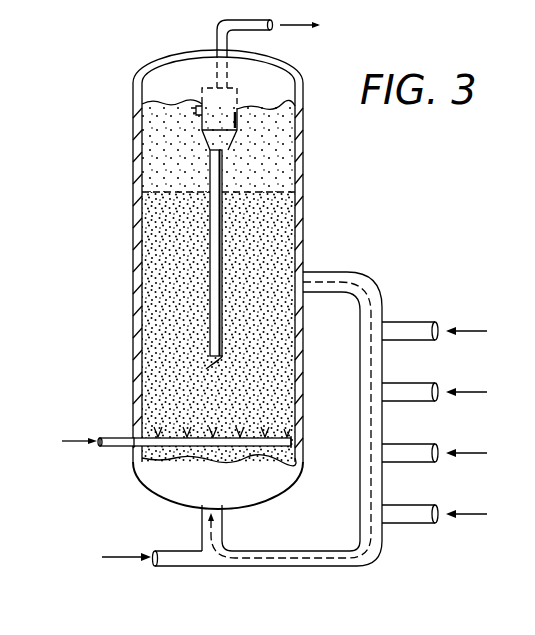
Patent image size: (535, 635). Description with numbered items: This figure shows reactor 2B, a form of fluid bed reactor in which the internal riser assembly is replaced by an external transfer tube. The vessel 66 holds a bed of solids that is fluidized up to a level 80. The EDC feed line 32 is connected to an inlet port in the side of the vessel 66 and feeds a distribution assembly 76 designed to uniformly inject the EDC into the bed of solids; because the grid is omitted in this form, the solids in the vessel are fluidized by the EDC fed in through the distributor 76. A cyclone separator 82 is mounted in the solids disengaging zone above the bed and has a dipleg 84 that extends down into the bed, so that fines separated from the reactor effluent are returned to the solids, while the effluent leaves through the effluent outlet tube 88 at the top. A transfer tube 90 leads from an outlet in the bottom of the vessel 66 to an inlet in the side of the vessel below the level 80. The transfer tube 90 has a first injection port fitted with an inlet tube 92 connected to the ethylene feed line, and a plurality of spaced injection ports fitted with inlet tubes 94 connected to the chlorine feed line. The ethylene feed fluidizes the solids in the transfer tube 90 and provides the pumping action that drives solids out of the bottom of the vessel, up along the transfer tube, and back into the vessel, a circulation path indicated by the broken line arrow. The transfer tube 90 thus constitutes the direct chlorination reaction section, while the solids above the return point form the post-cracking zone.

The reactor 2B is at (312, 160).
The vessel 66 is at (303, 240).
The level 80 is at (162, 191).
The cyclone separator 82 is at (223, 123).
The dipleg 84 is at (212, 224).
The effluent outlet tube 88 is at (217, 40).
The distribution assembly 76 is at (278, 444).
The EDC feed line 32 is at (117, 448).
The transfer tube 90 is at (365, 278).
The inlet tubes 94 is at (400, 322).
The inlet tube 92 is at (176, 568).